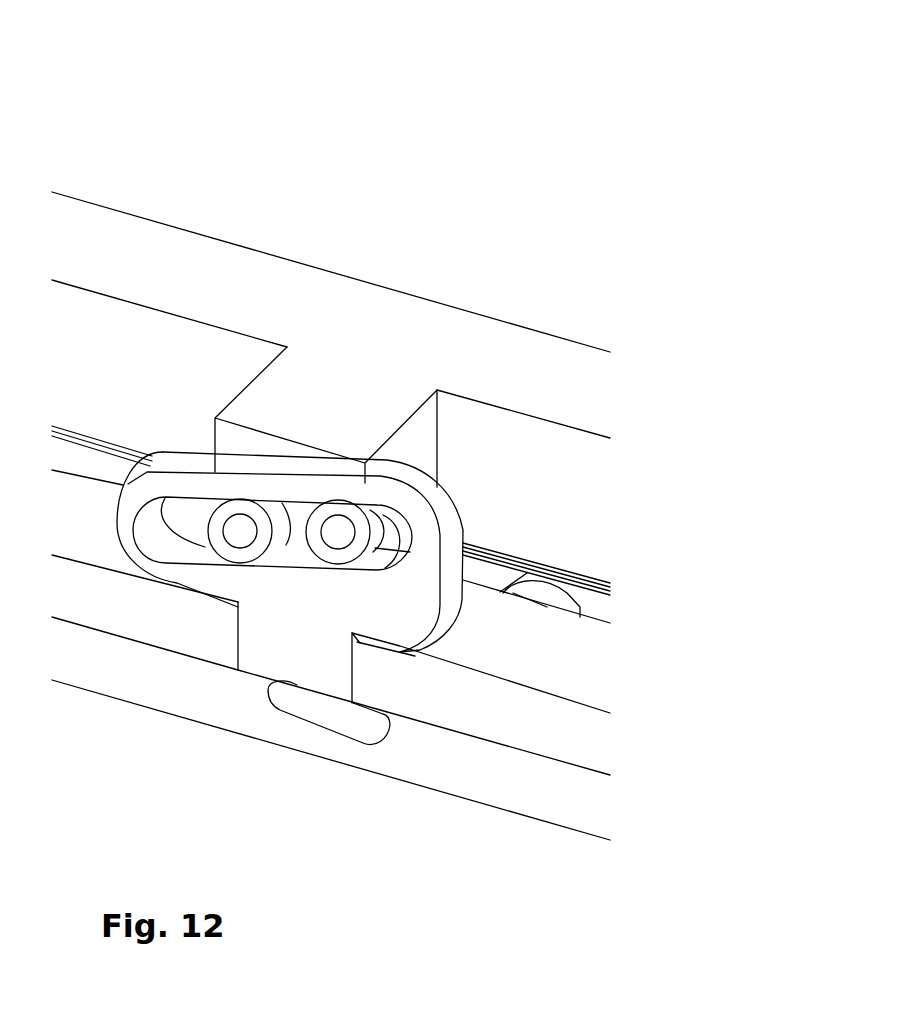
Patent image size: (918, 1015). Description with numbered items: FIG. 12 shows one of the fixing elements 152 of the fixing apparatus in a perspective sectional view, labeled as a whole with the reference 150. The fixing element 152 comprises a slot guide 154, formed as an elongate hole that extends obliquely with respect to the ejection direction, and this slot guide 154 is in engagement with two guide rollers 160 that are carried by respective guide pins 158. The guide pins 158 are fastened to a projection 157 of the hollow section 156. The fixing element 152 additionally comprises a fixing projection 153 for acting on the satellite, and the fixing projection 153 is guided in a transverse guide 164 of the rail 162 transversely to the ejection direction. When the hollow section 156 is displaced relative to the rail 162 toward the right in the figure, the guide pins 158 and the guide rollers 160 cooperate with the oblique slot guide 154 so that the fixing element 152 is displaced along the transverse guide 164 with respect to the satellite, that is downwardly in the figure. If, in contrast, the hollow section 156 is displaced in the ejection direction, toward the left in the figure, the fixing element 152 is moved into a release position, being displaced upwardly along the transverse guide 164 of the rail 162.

The fastening device 150 is at (385, 90).
The fixing element 152 is at (403, 613).
The fixing projection 153 is at (277, 660).
The slot guide 154 is at (188, 547).
The hollow section 156 is at (478, 352).
The projection 157 is at (255, 407).
The guide pin 158 is at (340, 530).
The guide roller 160 is at (313, 520).
The rail 162 is at (518, 718).
The transverse guide 164 is at (343, 675).